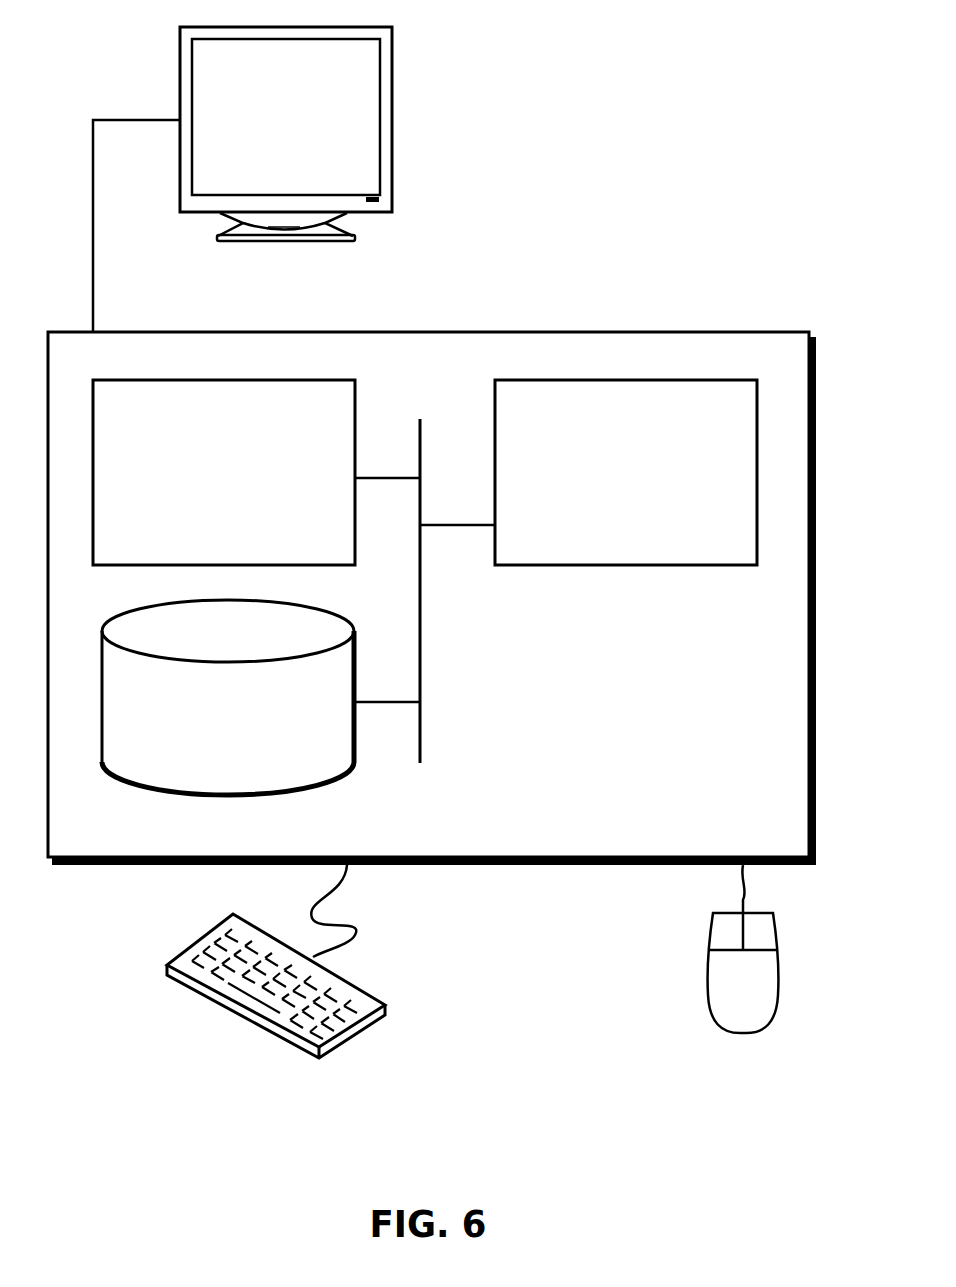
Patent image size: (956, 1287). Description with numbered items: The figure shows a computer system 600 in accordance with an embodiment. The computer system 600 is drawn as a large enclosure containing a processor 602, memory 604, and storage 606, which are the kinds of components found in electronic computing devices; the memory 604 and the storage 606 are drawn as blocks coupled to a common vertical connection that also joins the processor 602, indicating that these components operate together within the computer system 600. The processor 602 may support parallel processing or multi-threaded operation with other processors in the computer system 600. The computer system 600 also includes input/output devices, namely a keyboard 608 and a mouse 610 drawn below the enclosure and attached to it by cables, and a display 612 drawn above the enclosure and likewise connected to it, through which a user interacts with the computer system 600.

The computer system 600 is at (483, 293).
The processor 602 is at (626, 472).
The memory 604 is at (224, 472).
The storage 606 is at (228, 697).
The keyboard 608 is at (188, 985).
The mouse 610 is at (743, 949).
The display 612 is at (242, 179).